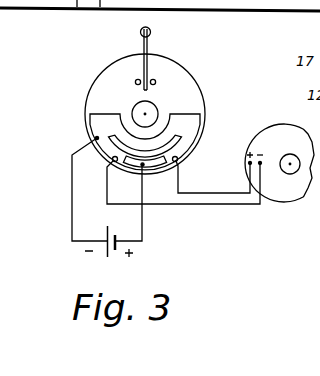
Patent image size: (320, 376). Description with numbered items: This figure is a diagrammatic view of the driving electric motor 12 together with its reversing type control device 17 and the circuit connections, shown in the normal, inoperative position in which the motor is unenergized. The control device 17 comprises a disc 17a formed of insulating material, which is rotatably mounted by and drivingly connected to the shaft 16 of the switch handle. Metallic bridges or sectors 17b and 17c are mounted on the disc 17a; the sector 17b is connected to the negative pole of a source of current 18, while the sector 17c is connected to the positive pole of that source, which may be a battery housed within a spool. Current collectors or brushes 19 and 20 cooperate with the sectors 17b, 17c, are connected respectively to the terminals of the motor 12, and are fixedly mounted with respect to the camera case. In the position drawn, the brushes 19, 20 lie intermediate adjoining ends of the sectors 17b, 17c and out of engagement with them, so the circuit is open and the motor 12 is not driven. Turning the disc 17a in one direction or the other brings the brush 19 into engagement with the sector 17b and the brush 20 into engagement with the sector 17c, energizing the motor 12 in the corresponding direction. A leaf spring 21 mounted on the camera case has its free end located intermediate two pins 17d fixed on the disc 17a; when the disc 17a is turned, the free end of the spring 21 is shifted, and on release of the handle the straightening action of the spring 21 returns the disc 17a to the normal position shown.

The motor 12 is at (283, 133).
The shaft 16 is at (148, 110).
The motor reversing device 17 is at (84, 98).
The disc 17a is at (107, 83).
The sector 17b is at (98, 117).
The sector 17c is at (152, 167).
The pins 17d is at (136, 80).
The source of current 18 is at (100, 256).
The brush 19 is at (113, 161).
The brush 20 is at (177, 161).
The leaf spring 21 is at (148, 52).